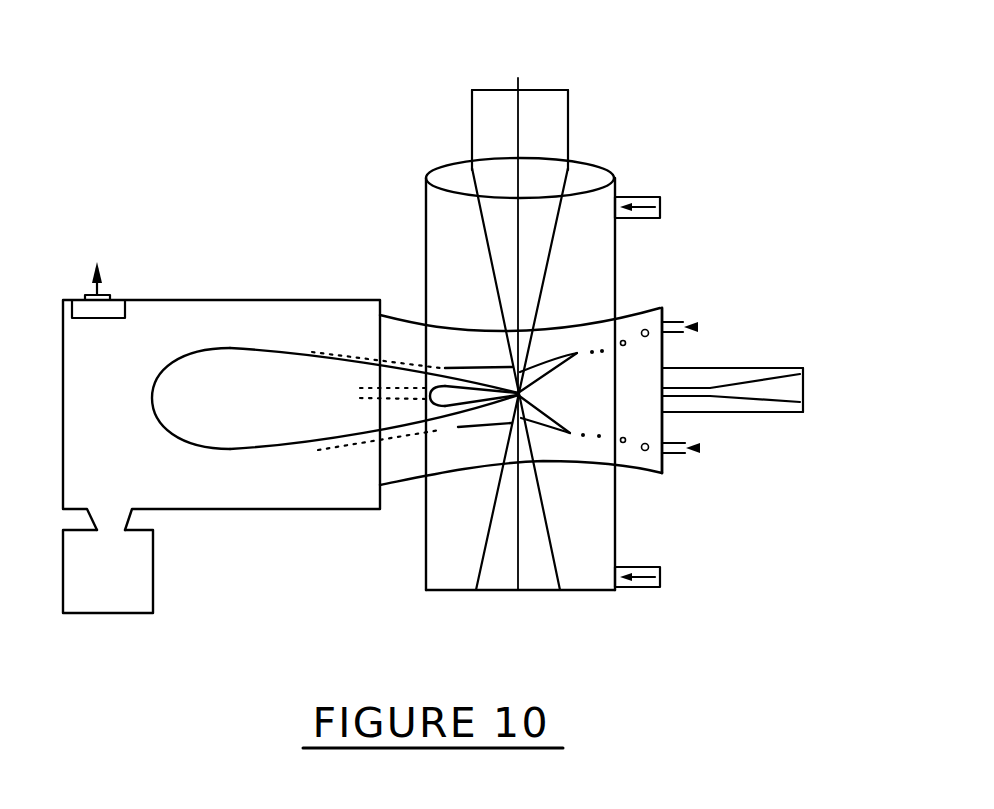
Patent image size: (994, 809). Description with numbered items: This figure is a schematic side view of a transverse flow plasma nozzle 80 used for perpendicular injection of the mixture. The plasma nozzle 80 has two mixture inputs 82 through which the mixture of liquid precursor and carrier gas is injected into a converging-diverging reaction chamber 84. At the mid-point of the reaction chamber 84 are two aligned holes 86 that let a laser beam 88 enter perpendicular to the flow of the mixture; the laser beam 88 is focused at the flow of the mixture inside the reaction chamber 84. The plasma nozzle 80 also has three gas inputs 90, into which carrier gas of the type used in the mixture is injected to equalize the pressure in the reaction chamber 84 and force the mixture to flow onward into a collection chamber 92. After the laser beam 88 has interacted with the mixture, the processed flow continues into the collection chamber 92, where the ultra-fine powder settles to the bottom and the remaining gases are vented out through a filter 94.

The transverse flow plasma nozzle 80 is at (772, 152).
The mixture inputs 82 is at (698, 327).
The converging-diverging reaction chamber 84 is at (567, 350).
The aligned holes 86 is at (517, 332).
The laser beam 88 is at (568, 130).
The gas inputs 90 is at (662, 207).
The collection chamber 92 is at (153, 557).
The filter 94 is at (108, 295).